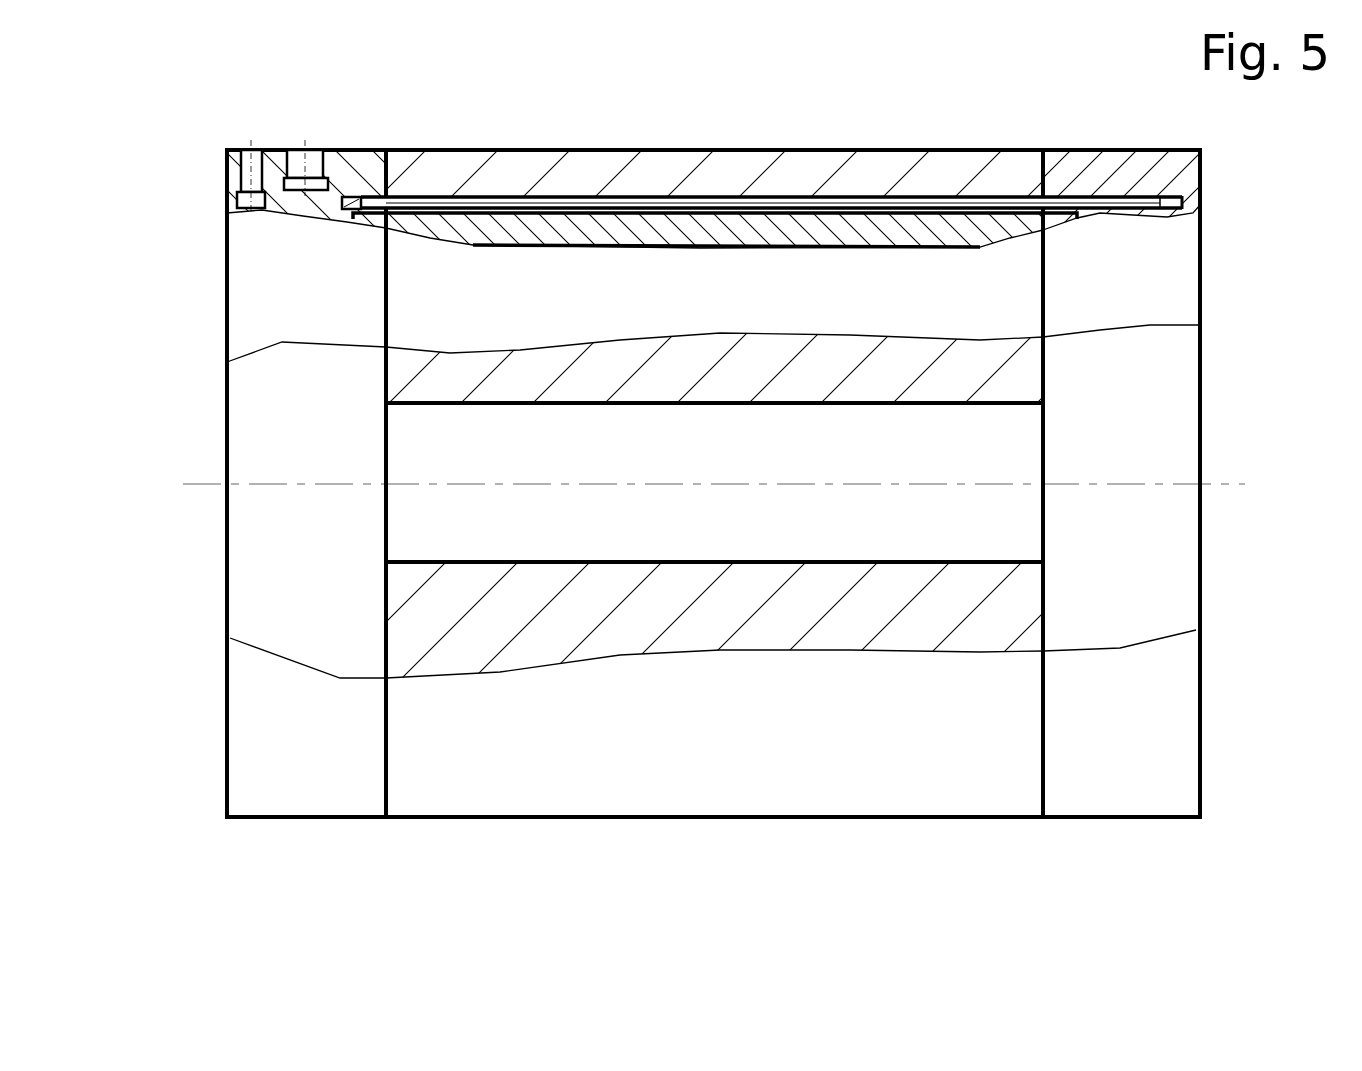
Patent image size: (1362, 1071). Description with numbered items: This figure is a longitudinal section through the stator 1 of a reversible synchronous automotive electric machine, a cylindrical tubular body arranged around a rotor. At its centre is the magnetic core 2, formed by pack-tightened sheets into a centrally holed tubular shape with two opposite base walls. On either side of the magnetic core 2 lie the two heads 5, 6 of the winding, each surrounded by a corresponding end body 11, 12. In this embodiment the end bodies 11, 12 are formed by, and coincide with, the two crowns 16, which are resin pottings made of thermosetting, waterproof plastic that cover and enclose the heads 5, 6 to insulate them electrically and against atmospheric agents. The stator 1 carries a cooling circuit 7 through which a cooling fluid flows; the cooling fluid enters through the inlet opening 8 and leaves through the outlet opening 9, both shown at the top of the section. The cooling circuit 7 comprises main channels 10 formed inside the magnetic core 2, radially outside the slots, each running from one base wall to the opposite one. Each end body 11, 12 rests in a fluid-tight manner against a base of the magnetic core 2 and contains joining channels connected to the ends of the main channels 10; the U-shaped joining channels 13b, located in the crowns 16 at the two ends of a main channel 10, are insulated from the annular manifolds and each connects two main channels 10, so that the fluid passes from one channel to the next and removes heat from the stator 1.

The stator 1 is at (718, 550).
The magnetic core 2 is at (968, 745).
The head of the winding 5 is at (306, 855).
The head of the winding 6 is at (1126, 857).
The cooling circuit 7 is at (150, 803).
The inlet opening 8 is at (249, 136).
The outlet opening 9 is at (308, 136).
The main channels 10 is at (597, 200).
The end body 11 is at (259, 541).
The end body 12 is at (1168, 541).
The U-shaped joining channels 13b is at (374, 200).
The crowns 16 is at (712, 541).